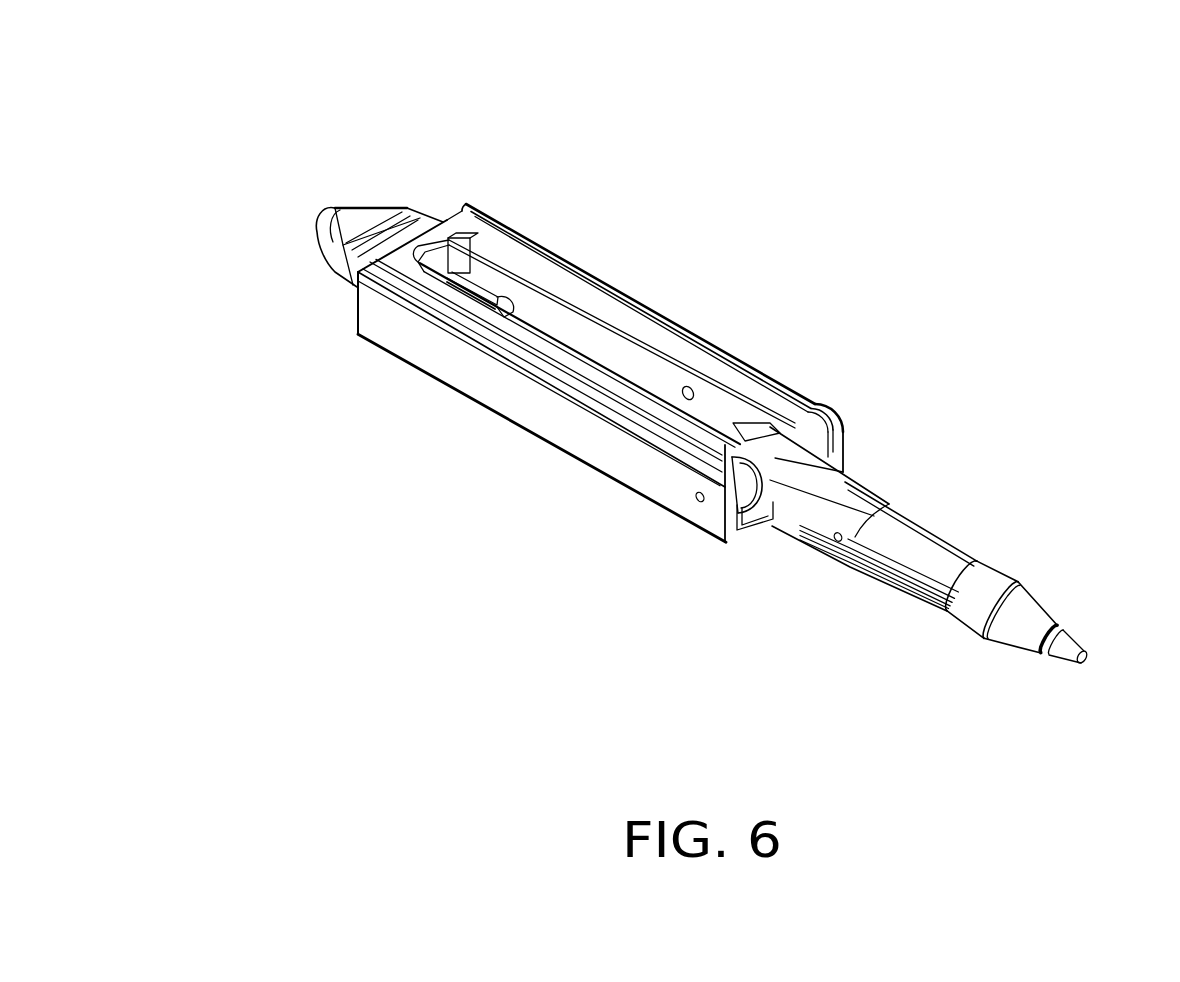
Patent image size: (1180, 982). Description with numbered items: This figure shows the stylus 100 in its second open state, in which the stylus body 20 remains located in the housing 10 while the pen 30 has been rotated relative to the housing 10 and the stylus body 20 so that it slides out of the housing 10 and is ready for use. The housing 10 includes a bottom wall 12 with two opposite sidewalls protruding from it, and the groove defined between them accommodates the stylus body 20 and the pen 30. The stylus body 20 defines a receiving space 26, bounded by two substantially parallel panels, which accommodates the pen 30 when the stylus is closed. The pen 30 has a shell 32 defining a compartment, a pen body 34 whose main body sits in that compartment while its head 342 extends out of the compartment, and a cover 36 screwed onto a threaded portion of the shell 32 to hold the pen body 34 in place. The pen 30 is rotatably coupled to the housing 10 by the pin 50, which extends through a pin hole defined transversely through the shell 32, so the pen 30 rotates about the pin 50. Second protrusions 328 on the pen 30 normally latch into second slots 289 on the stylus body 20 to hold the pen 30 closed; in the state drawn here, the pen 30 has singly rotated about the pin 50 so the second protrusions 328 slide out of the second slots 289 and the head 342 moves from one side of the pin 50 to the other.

The stylus 100 is at (250, 112).
The housing 10 is at (658, 316).
The bottom wall 12 is at (760, 529).
The stylus body 20 is at (452, 227).
The receiving space 26 is at (560, 313).
The second slots 289 is at (690, 389).
The pen 30 is at (1022, 460).
The shell 32 is at (930, 542).
The second protrusions 328 is at (823, 543).
The pen body 34 is at (1053, 629).
The head 342 is at (1070, 653).
The cover 36 is at (988, 579).
The pin 50 is at (697, 497).